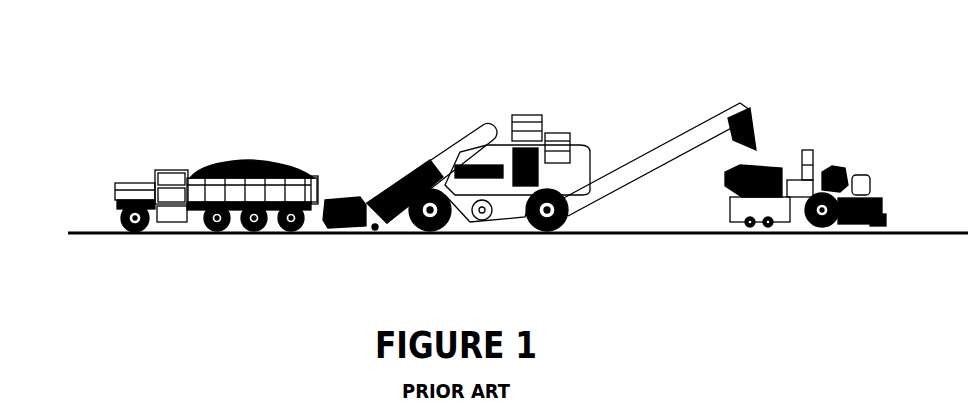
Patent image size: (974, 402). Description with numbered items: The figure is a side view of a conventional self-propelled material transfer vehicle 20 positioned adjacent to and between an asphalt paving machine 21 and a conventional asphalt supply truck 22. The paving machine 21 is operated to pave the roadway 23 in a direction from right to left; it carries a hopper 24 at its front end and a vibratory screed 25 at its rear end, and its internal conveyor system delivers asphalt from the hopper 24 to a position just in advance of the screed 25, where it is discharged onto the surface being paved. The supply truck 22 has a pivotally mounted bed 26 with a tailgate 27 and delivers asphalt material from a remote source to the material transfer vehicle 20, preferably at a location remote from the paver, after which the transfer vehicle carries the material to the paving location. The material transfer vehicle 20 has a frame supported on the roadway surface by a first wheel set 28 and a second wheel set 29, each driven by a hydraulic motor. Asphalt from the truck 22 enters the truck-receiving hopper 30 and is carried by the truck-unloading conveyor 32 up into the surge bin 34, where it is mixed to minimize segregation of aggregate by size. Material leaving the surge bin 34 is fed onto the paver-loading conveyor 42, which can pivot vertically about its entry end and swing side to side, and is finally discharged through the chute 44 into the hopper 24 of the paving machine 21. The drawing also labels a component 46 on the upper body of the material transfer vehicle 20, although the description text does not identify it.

The material transfer vehicle 20 is at (560, 169).
The asphalt paving machine 21 is at (822, 166).
The asphalt supply truck 22 is at (236, 164).
The roadway 23 is at (915, 228).
The hopper 24 is at (769, 165).
The vibratory screed 25 is at (880, 218).
The bed 26 is at (294, 172).
The tailgate 27 is at (319, 190).
The first wheel set 28 is at (406, 234).
The second wheel set 29 is at (578, 218).
The truck-receiving hopper 30 is at (358, 196).
The truck-unloading conveyor 32 is at (440, 145).
The surge bin 34 is at (450, 234).
The paver-loading conveyor 42 is at (658, 140).
The chute 44 is at (762, 132).
The engine compartment 46 is at (556, 130).